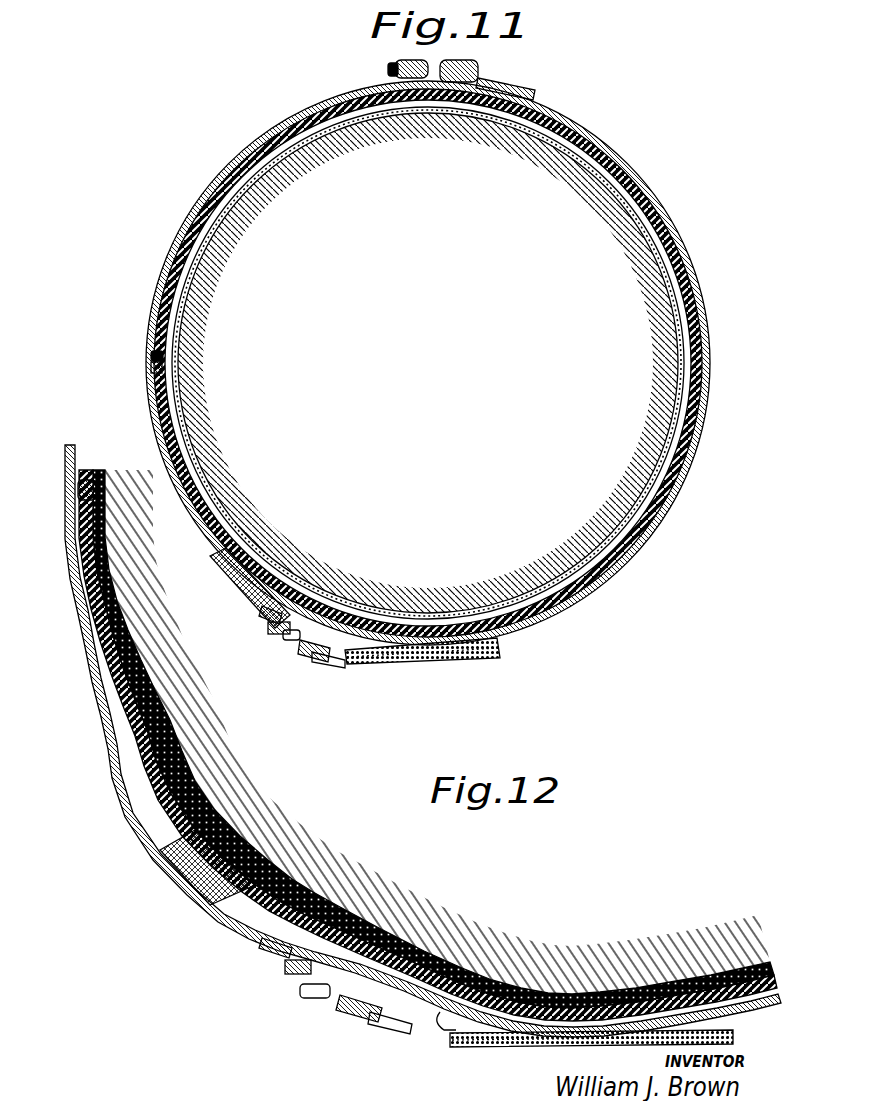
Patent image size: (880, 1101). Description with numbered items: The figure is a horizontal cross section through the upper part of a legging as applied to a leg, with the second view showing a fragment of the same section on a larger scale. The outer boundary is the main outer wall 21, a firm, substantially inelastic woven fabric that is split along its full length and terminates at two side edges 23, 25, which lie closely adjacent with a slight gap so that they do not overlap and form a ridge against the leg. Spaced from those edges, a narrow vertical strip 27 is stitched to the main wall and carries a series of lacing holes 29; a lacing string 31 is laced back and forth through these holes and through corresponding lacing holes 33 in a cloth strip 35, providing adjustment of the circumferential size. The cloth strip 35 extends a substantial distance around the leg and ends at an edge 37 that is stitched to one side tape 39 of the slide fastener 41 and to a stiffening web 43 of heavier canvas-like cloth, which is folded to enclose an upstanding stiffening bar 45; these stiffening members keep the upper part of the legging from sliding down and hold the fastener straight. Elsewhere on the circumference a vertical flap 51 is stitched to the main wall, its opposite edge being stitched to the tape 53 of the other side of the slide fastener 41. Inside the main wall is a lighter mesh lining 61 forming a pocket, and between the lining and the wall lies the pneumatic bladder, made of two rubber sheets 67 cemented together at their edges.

In FIG. 11, the main outer wall 21 is at (606, 150).
In FIG. 12, the main outer wall 21 is at (75, 582).
In FIG. 11, the side edge 23 is at (150, 357).
In FIG. 11, the side edge 25 is at (152, 363).
In FIG. 12, the side edge 25 is at (70, 480).
In FIG. 11, the vertical strip 27 is at (513, 88).
In FIG. 11, the lacing holes 29 is at (480, 72).
In FIG. 11, the lacing string 31 is at (403, 60).
In FIG. 11, the lacing holes 33 is at (390, 68).
In FIG. 11, the cloth strip 35 is at (240, 148).
In FIG. 12, the cloth strip 35 is at (70, 517).
In FIG. 11, the edge 37 is at (260, 613).
In FIG. 12, the edge 37 is at (263, 947).
In FIG. 11, the side tape 39 is at (265, 625).
In FIG. 12, the side tape 39 is at (288, 970).
In FIG. 11, the slide fastener 41 is at (283, 635).
In FIG. 12, the slide fastener 41 is at (312, 993).
In FIG. 11, the stiffening web 43 is at (217, 578).
In FIG. 12, the stiffening web 43 is at (197, 883).
In FIG. 11, the stiffening bar 45 is at (307, 647).
In FIG. 12, the stiffening bar 45 is at (377, 1007).
In FIG. 11, the vertical strip or flap 51 is at (383, 663).
In FIG. 12, the vertical strip or flap 51 is at (470, 1041).
In FIG. 11, the tape 53 is at (305, 655).
In FIG. 12, the tape 53 is at (377, 1020).
In FIG. 11, the lining 61 is at (210, 242).
In FIG. 12, the lining 61 is at (178, 763).
In FIG. 11, the rubber sheets 67 is at (213, 219).
In FIG. 12, the rubber sheets 67 is at (127, 690).